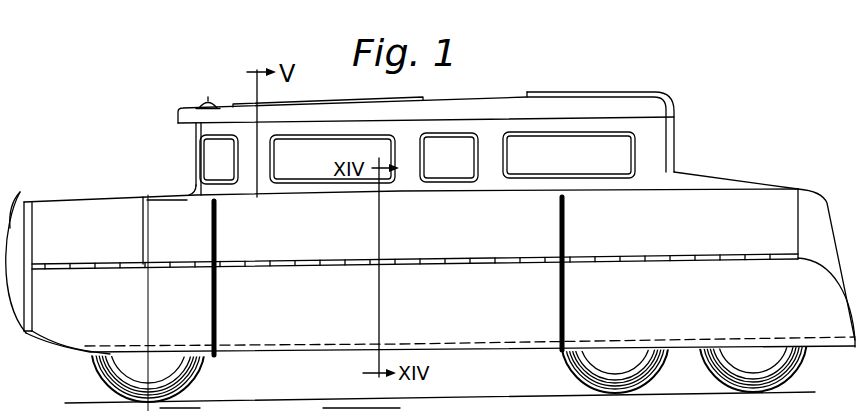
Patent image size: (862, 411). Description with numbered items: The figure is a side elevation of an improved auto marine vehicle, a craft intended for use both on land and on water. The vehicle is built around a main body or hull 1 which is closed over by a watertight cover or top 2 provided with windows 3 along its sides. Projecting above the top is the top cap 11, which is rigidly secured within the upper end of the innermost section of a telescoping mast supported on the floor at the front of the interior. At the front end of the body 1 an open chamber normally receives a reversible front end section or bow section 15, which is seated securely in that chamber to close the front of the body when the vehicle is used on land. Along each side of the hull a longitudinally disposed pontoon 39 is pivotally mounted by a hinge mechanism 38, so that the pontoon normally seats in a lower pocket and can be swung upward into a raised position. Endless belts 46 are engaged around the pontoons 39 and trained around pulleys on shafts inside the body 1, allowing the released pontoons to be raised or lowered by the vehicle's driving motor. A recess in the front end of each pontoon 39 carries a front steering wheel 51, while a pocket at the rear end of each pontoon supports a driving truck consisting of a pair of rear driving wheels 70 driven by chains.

The main body or hull 1 is at (113, 208).
The watertight cover or top 2 is at (662, 163).
The windows 3 is at (547, 152).
The top cap 11 is at (212, 94).
The reversible front end section or bow section 15 is at (39, 245).
The hinge mechanism 38 is at (432, 267).
The pontoon 39 is at (612, 287).
The endless belts 46 is at (217, 313).
The front steering wheel 51 is at (110, 377).
The rear driving wheels 70 is at (727, 372).